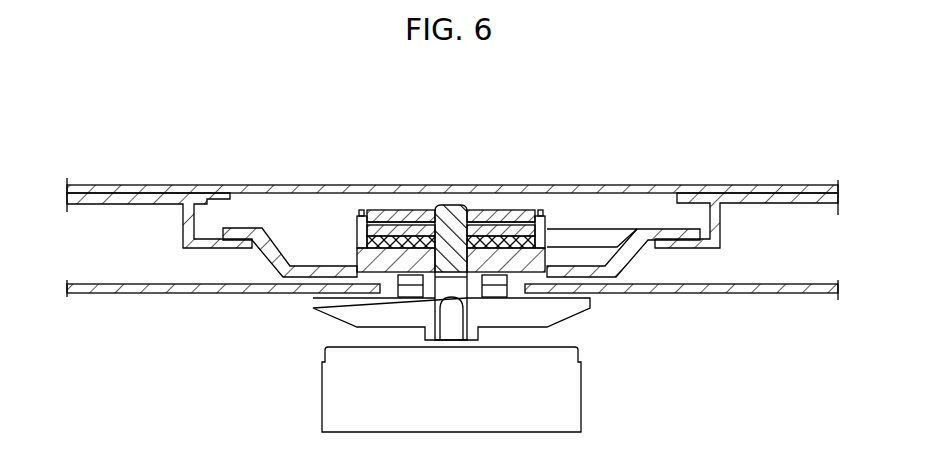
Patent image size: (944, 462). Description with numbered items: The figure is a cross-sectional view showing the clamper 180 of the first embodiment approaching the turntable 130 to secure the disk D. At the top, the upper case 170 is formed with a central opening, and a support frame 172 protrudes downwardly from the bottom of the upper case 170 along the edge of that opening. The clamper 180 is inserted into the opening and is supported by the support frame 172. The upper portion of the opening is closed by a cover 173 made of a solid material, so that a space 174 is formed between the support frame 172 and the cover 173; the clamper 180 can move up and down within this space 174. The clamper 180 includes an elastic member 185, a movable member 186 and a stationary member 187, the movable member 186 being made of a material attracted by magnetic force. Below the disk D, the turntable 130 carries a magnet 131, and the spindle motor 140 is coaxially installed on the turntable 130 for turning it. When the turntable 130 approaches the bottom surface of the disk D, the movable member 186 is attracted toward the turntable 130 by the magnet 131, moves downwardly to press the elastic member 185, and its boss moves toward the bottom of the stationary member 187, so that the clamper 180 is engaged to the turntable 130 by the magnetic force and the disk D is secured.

The upper case 170 is at (754, 192).
The support frame 172 is at (716, 232).
The cover 173 is at (609, 205).
The space 174 is at (285, 213).
The clamper 180 is at (270, 267).
The elastic member 185 is at (387, 213).
The movable member 186 is at (427, 205).
The stationary member 187 is at (507, 210).
The turntable 130 is at (575, 310).
The magnet 131 is at (397, 290).
The spindle motor 140 is at (565, 398).
The disk D is at (760, 297).